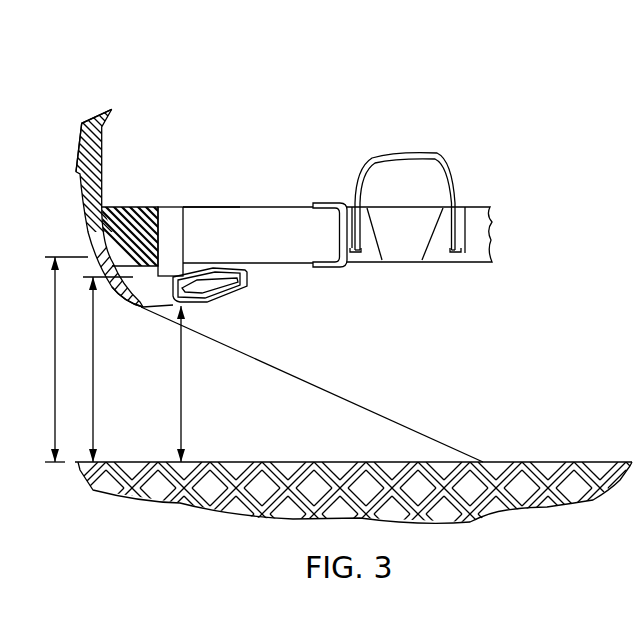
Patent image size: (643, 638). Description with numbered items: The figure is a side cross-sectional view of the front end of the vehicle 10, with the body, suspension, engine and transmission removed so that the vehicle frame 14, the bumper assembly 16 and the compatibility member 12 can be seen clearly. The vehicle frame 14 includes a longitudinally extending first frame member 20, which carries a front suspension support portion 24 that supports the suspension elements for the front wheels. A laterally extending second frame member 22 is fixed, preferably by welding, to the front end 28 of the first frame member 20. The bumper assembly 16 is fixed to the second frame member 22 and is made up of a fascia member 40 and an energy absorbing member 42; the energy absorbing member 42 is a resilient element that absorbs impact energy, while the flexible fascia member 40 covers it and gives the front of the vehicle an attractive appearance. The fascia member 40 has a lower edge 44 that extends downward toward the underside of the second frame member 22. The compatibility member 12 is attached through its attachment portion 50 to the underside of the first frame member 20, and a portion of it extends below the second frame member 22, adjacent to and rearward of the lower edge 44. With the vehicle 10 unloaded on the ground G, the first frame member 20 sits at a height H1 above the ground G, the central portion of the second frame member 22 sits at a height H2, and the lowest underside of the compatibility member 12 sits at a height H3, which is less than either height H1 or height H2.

The vehicle 10 is at (303, 40).
The vehicle frame 14 is at (331, 112).
The front suspension support portion 24 is at (420, 162).
The first frame member 20 is at (268, 232).
The front end 28 is at (187, 217).
The second frame member 22 is at (171, 225).
The energy absorbing member 42 is at (136, 227).
The fascia member 40 is at (103, 130).
The bumper assembly 16 is at (169, 103).
The lower edge 44 is at (118, 306).
The compatibility member 12 is at (247, 280).
The attachment portion 50 is at (208, 282).
The height H1 is at (63, 359).
The height H2 is at (105, 369).
The height H3 is at (177, 384).
The ground G is at (587, 462).